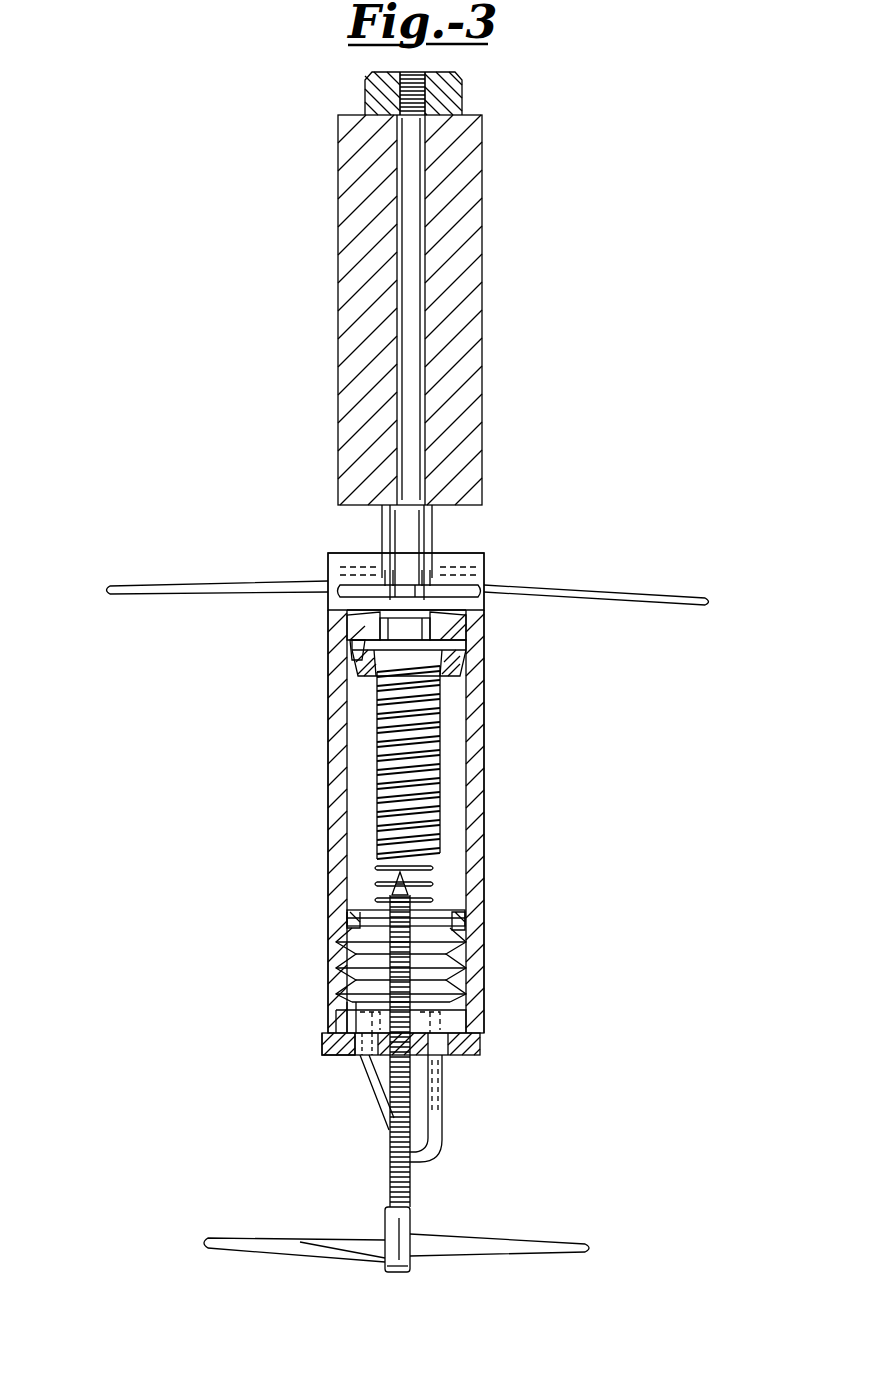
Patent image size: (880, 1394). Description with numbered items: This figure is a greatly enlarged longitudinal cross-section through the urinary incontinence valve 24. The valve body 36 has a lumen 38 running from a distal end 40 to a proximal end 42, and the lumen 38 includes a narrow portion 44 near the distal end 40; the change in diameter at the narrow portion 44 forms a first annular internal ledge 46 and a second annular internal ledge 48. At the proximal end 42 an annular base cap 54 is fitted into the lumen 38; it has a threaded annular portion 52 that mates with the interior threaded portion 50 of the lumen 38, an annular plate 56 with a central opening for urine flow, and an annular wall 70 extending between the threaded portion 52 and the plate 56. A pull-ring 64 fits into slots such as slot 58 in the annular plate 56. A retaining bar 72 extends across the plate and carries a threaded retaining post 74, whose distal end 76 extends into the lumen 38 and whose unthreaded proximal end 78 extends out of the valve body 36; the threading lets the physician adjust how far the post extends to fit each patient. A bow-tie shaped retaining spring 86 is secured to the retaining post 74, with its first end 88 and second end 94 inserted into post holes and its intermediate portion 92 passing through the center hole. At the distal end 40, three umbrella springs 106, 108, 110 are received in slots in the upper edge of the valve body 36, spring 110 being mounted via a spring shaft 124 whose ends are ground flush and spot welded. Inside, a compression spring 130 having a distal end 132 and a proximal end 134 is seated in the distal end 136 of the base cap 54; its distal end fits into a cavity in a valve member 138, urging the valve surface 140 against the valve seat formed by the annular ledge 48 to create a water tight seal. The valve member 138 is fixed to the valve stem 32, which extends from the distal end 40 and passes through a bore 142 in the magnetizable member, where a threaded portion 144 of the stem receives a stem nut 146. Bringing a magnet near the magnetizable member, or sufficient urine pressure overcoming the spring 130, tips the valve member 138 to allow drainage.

The urinary incontinence valve 24 is at (486, 840).
The valve stem 32 is at (482, 342).
The valve body 36 is at (484, 742).
The lumen 38 is at (440, 806).
The distal end 40 is at (486, 568).
The proximal end 42 is at (484, 1042).
The narrow portion 44 is at (360, 622).
The first annular internal ledge 46 is at (470, 622).
The second annular internal ledge 48 is at (360, 648).
The interior threaded portion 50 is at (470, 976).
The threaded annular portion 52 is at (350, 920).
The annular base cap 54 is at (330, 1056).
The annular plate 56 is at (368, 1072).
The slot 58 is at (440, 1088).
The pull-ring 64 is at (381, 1106).
The annular wall 70 is at (350, 1002).
The retaining bar 72 is at (340, 1016).
The retaining post 74 is at (412, 1186).
The distal end of retaining post 76 is at (410, 900).
The proximal end of retaining post 78 is at (400, 1274).
The retaining spring 86 is at (570, 1247).
The first end of retaining spring 88 is at (412, 1236).
The intermediate portion of retaining spring 92 is at (412, 1250).
The second end of retaining spring 94 is at (375, 1263).
The umbrella spring 106 is at (122, 586).
The umbrella spring 108 is at (690, 600).
The umbrella spring 110 is at (345, 584).
The spring shaft 124 is at (392, 565).
The compression spring 130 is at (440, 828).
The distal end of compression spring 132 is at (445, 672).
The proximal end of compression spring 134 is at (452, 912).
The distal end of annular base cap 136 is at (464, 930).
The valve member 138 is at (356, 656).
The valve surface 140 is at (440, 630).
The bore 142 is at (423, 268).
The threaded portion 144 is at (462, 88).
The stem nut 146 is at (470, 112).